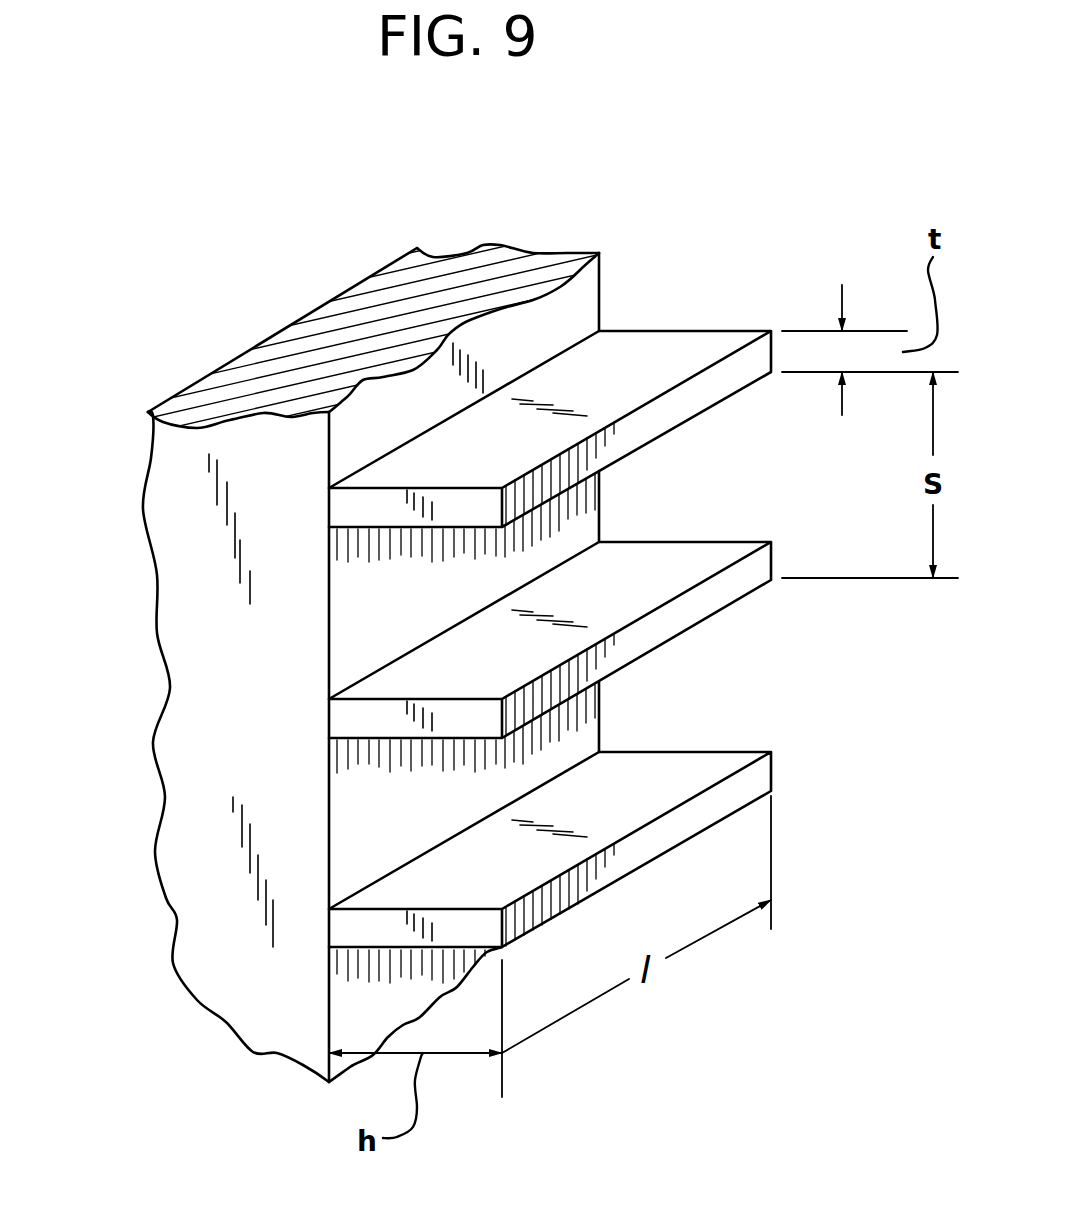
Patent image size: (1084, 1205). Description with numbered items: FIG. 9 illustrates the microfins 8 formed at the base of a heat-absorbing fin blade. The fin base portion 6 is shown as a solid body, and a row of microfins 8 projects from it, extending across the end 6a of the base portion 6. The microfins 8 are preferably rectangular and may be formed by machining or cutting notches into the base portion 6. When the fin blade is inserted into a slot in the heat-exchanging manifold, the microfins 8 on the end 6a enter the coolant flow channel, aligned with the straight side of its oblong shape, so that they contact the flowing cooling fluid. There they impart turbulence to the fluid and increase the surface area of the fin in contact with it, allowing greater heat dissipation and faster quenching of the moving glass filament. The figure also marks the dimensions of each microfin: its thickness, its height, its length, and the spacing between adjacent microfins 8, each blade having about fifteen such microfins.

The fin base portion 6 is at (198, 548).
The end of base portion 6a is at (580, 303).
The microfins 8 is at (697, 771).